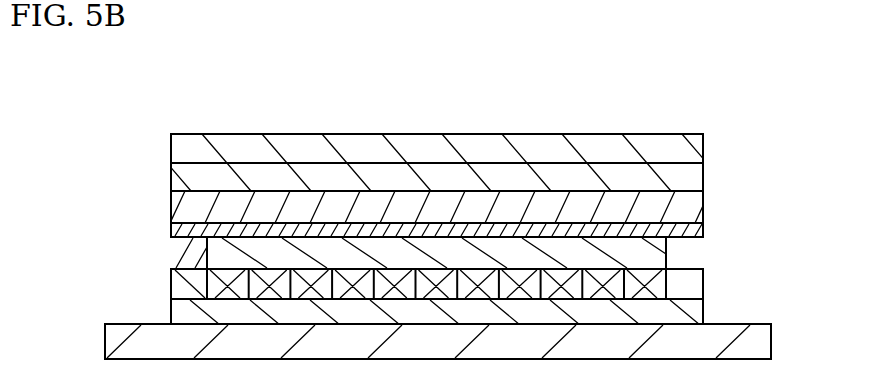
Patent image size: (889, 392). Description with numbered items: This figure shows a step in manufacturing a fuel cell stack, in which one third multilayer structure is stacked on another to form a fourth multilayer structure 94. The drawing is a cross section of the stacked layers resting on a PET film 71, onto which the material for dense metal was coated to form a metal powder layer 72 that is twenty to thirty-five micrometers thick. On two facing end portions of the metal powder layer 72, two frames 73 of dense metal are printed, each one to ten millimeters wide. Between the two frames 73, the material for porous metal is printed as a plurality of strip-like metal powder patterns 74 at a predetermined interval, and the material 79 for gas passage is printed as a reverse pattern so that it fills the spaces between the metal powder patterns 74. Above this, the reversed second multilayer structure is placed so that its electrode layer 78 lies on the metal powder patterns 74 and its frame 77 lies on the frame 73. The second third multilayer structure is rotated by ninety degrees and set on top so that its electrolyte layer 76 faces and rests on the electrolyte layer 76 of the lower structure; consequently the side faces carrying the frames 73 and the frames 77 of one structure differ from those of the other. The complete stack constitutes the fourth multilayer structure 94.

The fourth multilayer structure 94 is at (199, 101).
The PET film 71 is at (762, 338).
The metal powder layer 72 is at (686, 143).
The frame 73 is at (697, 177).
The metal powder pattern 74 is at (363, 287).
The electrolyte layer 76 is at (171, 232).
The frame 77 is at (683, 218).
The electrode layer 78 is at (668, 248).
The material for gas passage 79 is at (483, 285).